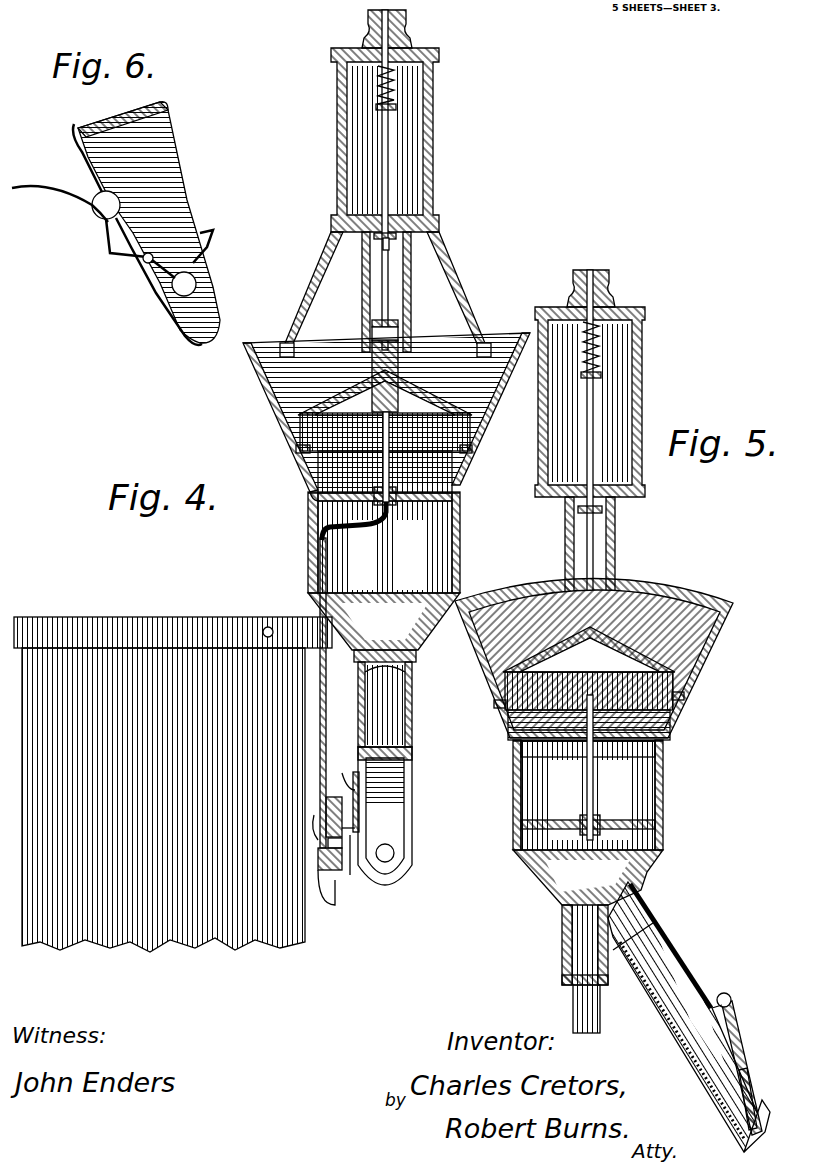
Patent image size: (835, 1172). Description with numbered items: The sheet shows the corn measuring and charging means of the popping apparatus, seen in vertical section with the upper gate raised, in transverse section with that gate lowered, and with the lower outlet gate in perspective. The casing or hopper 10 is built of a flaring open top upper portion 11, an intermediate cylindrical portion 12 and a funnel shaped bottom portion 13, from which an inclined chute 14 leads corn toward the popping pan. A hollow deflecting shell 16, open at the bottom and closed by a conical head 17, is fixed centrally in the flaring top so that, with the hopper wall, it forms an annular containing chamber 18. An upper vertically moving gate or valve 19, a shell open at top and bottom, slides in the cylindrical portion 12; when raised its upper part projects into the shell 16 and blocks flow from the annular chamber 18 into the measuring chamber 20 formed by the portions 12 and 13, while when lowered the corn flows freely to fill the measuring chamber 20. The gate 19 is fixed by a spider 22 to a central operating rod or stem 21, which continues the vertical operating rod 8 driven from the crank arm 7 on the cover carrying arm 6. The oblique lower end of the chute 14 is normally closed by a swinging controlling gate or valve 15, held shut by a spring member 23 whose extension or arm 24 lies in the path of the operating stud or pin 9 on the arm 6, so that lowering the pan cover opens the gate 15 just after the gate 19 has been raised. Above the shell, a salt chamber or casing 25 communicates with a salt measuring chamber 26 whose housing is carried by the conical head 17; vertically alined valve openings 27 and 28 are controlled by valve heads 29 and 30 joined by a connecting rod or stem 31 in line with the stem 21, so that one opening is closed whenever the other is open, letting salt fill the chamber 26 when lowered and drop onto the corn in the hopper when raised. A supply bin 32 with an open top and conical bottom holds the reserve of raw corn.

In FIG. 4, the cover carrying arm 6 is at (330, 807).
In FIG. 4, the crank arm 7 is at (330, 857).
In FIG. 4, the vertical operating rod 8 is at (327, 712).
In FIG. 4, the operating stud or pin 9 is at (337, 870).
In FIG. 4, the casing or hopper 10 is at (290, 490).
In FIG. 4, the flaring open top upper portion 11 is at (266, 402).
In FIG. 5, the flaring open top upper portion 11 is at (597, 658).
In FIG. 4, the intermediate cylindrical portion 12 is at (460, 556).
In FIG. 5, the intermediate cylindrical portion 12 is at (663, 801).
In FIG. 4, the funnel shaped bottom portion 13 is at (384, 621).
In FIG. 5, the funnel shaped bottom portion 13 is at (588, 941).
In FIG. 4, the inclined chute 14 is at (398, 726).
In FIG. 5, the inclined chute 14 is at (680, 968).
In FIG. 4, the controlling gate or valve 15 is at (396, 813).
In FIG. 5, the controlling gate or valve 15 is at (732, 1040).
In FIG. 6, the controlling gate or valve 15 is at (182, 208).
In FIG. 4, the hollow deflecting shell 16 is at (441, 418).
In FIG. 5, the hollow deflecting shell 16 is at (589, 706).
In FIG. 4, the conical head 17 is at (418, 400).
In FIG. 5, the conical head 17 is at (626, 656).
In FIG. 4, the annular containing chamber 18 is at (472, 440).
In FIG. 5, the annular containing chamber 18 is at (494, 702).
In FIG. 4, the upper vertically moving gate or valve 19 is at (452, 455).
In FIG. 5, the upper vertically moving gate or valve 19 is at (658, 777).
In FIG. 4, the measuring chamber 20 is at (385, 547).
In FIG. 5, the measuring chamber 20 is at (556, 755).
In FIG. 4, the central operating rod or stem 21 is at (390, 436).
In FIG. 5, the central operating rod or stem 21 is at (594, 790).
In FIG. 4, the spider 22 is at (410, 494).
In FIG. 5, the spider 22 is at (612, 826).
In FIG. 4, the spring member 23 is at (360, 792).
In FIG. 5, the spring member 23 is at (740, 1052).
In FIG. 6, the spring member 23 is at (152, 243).
In FIG. 4, the extension or arm 24 is at (347, 773).
In FIG. 6, the extension or arm 24 is at (40, 200).
In FIG. 4, the salt chamber or casing 25 is at (414, 150).
In FIG. 5, the salt chamber or casing 25 is at (620, 388).
In FIG. 4, the salt measuring chamber 26 is at (411, 278).
In FIG. 4, the upper valve opening 27 is at (392, 236).
In FIG. 5, the upper valve opening 27 is at (597, 500).
In FIG. 4, the lower valve opening 28 is at (398, 335).
In FIG. 5, the lower valve opening 28 is at (606, 637).
In FIG. 4, the upper valve head 29 is at (373, 232).
In FIG. 5, the upper valve head 29 is at (604, 512).
In FIG. 4, the lower valve head 30 is at (400, 321).
In FIG. 5, the lower valve head 30 is at (604, 598).
In FIG. 4, the connecting rod or stem 31 is at (382, 263).
In FIG. 5, the connecting rod or stem 31 is at (596, 545).
In FIG. 4, the supply bin 32 is at (173, 784).